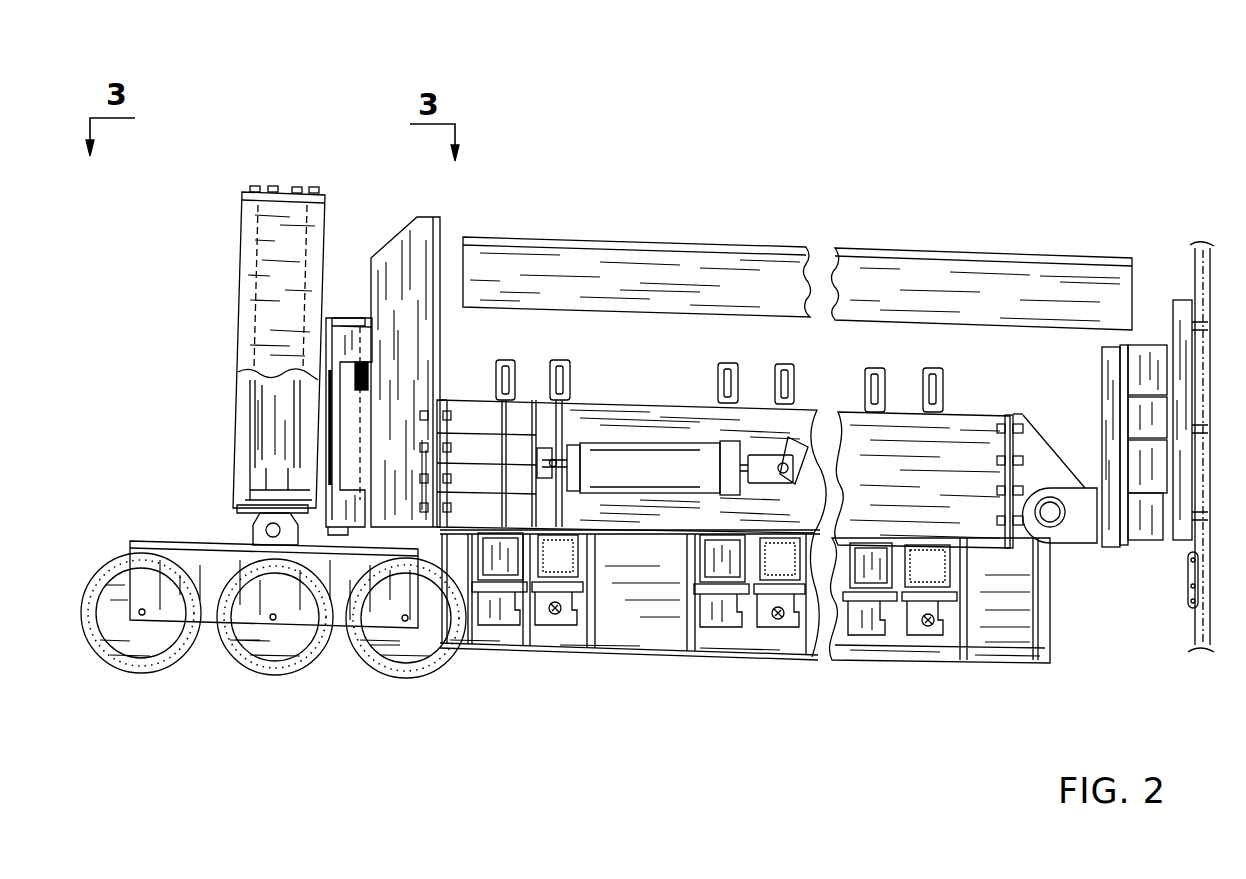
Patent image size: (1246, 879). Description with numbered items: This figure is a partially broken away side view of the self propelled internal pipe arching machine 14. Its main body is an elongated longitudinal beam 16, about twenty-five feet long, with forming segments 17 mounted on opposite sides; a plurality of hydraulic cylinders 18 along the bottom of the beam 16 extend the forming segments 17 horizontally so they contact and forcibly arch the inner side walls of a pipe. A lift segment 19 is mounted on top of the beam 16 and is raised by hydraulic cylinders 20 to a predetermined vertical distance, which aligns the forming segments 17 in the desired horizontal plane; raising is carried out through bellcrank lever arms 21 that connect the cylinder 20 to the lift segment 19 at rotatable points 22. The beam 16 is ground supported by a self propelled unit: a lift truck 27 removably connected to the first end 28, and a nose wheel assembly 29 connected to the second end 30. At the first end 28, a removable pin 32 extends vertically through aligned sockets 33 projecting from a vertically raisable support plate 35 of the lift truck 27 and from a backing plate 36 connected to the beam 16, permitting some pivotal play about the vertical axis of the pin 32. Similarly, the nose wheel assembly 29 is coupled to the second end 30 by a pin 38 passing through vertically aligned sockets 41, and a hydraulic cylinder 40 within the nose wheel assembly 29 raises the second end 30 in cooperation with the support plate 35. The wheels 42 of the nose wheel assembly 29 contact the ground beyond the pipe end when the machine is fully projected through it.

The self propelled internal pipe arching machine 14 is at (962, 208).
The longitudinal beam 16 is at (673, 410).
The forming segments 17 is at (620, 618).
The hydraulic cylinders 18 is at (556, 622).
The lift segment 19 is at (695, 247).
The hydraulic cylinders 20 is at (642, 468).
The bellcrank lever arms 21 is at (808, 440).
The rotatable points 22 is at (786, 464).
The lift truck 27 is at (1208, 560).
The first end 28 is at (1012, 412).
The nose wheel assembly 29 is at (168, 498).
The second end 30 is at (440, 212).
The removable pin 32 is at (1148, 342).
The sockets 33 is at (1118, 462).
The support plate 35 is at (1185, 364).
The backing plate 36 is at (1102, 370).
The pin 38 is at (347, 318).
The hydraulic cylinder 40 is at (268, 400).
The sockets 41 is at (345, 447).
The wheels 42 is at (360, 660).